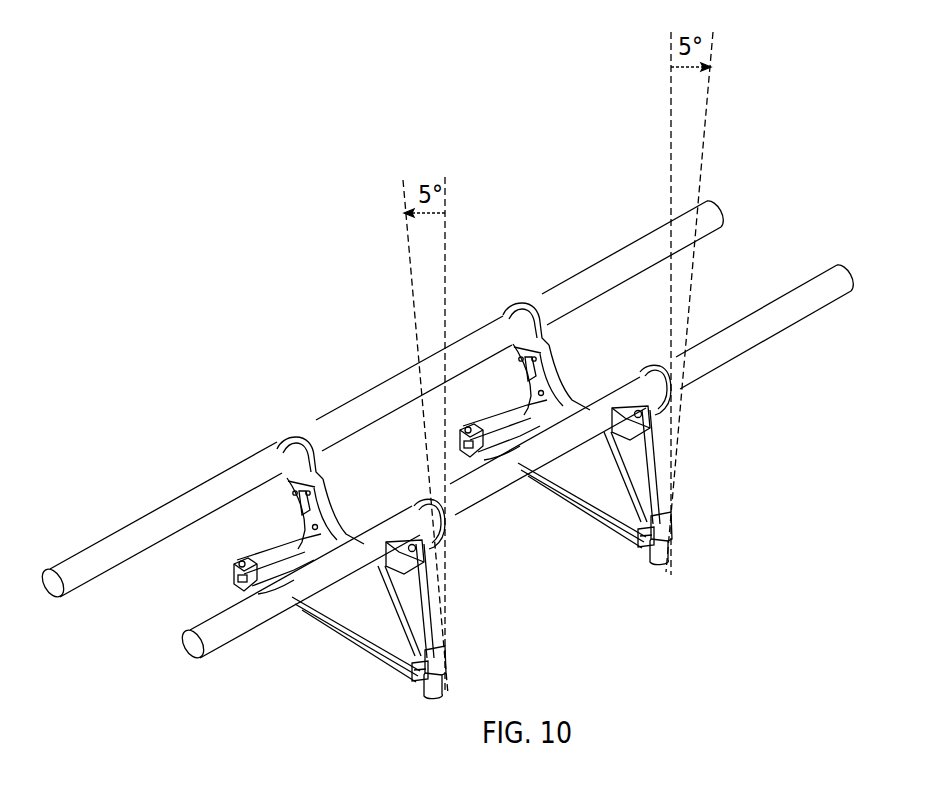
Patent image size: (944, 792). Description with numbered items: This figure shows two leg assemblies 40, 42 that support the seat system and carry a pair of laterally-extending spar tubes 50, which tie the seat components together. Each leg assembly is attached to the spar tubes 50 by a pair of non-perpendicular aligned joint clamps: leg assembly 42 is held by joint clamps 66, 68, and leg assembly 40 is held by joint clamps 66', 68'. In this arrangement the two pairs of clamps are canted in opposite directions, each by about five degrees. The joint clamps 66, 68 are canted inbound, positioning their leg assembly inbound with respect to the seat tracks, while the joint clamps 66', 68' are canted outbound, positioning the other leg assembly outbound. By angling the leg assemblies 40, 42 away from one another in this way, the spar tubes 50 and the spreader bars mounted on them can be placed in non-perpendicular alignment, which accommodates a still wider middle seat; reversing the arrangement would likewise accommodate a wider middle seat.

The leg assembly 40 is at (592, 537).
The leg assembly 42 is at (346, 656).
The spar tube 50 is at (712, 229).
The non-perpendicular aligned joint clamp 66 is at (453, 536).
The non-perpendicular aligned joint clamp 66' is at (639, 362).
The non-perpendicular aligned joint clamp 68 is at (285, 427).
The non-perpendicular aligned joint clamp 68' is at (525, 292).